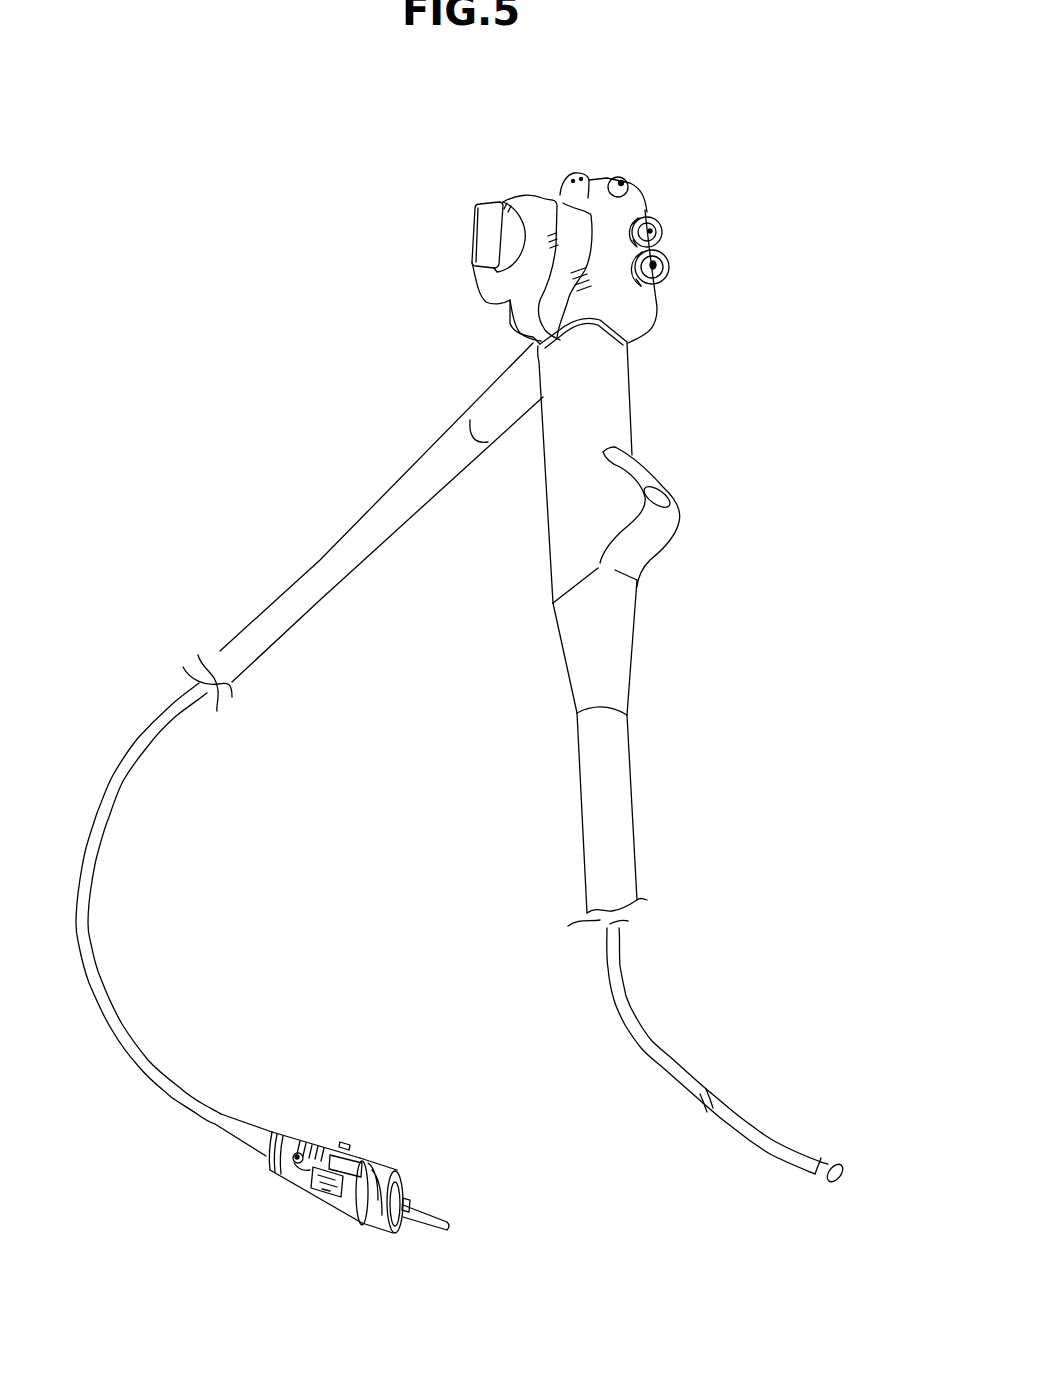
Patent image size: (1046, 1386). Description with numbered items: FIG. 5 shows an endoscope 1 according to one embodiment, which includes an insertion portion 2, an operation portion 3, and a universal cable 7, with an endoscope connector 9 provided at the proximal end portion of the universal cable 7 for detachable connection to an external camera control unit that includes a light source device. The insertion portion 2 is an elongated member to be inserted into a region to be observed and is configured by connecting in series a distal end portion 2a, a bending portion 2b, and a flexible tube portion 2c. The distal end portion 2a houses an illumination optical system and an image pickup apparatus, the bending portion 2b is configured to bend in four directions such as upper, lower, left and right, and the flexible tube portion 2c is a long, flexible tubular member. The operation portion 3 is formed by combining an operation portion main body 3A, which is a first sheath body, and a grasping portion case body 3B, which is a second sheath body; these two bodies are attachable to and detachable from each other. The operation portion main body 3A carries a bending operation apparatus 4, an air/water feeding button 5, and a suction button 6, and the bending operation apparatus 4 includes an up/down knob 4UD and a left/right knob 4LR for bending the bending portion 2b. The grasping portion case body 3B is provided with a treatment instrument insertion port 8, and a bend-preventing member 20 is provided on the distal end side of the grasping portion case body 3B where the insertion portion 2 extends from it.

The endoscope 1 is at (303, 425).
The insertion portion 2 is at (764, 1281).
The distal end portion 2a is at (820, 1180).
The bending portion 2b is at (722, 1115).
The flexible tube portion 2c is at (597, 823).
The operation portion 3 is at (753, 321).
The operation portion main body 3A is at (627, 313).
The grasping portion case body 3B is at (617, 437).
The bending operation apparatus 4 is at (343, 151).
The up/down knob 4UD is at (558, 198).
The left/right knob 4LR is at (470, 266).
The air/water feeding button 5 is at (679, 263).
The suction button 6 is at (665, 220).
The universal cable 7 is at (154, 726).
The treatment instrument insertion port 8 is at (687, 497).
The endoscope connector 9 is at (371, 1140).
The bend-preventing member 20 is at (623, 647).